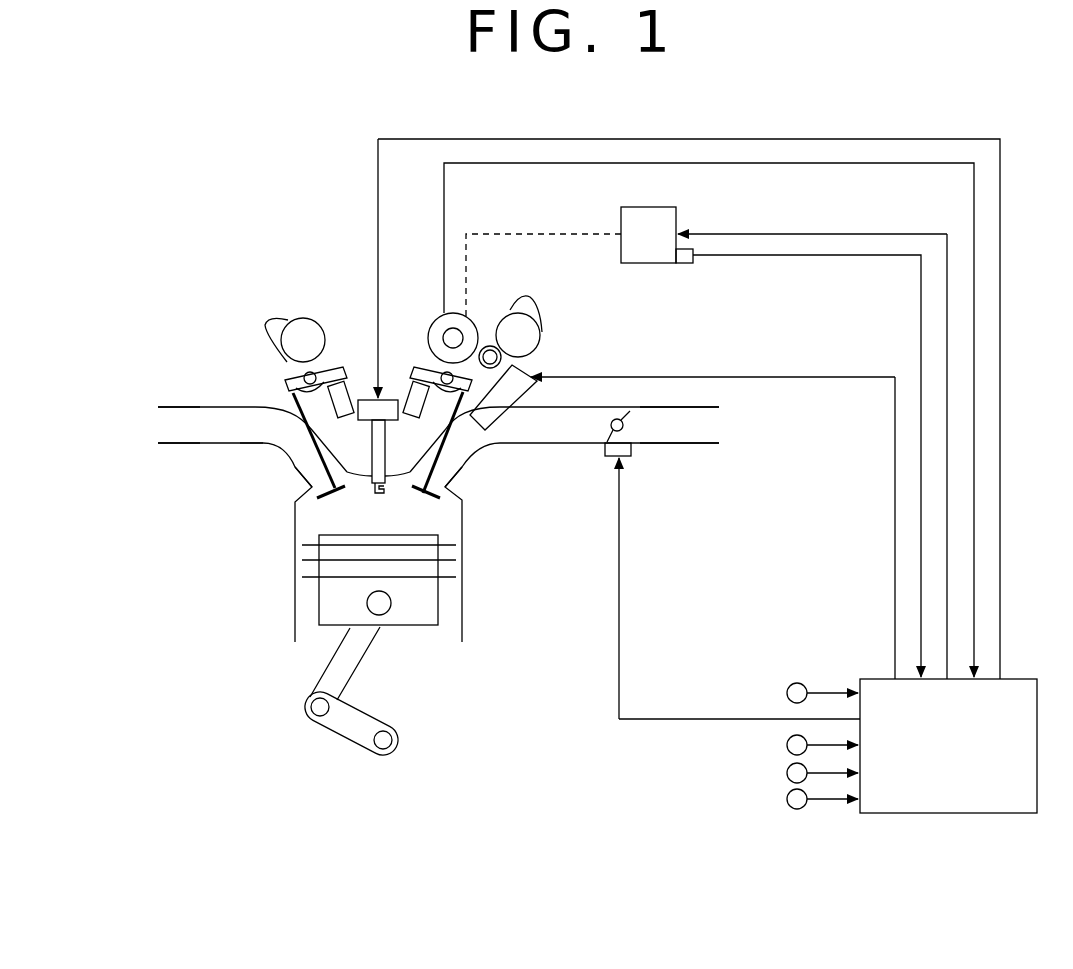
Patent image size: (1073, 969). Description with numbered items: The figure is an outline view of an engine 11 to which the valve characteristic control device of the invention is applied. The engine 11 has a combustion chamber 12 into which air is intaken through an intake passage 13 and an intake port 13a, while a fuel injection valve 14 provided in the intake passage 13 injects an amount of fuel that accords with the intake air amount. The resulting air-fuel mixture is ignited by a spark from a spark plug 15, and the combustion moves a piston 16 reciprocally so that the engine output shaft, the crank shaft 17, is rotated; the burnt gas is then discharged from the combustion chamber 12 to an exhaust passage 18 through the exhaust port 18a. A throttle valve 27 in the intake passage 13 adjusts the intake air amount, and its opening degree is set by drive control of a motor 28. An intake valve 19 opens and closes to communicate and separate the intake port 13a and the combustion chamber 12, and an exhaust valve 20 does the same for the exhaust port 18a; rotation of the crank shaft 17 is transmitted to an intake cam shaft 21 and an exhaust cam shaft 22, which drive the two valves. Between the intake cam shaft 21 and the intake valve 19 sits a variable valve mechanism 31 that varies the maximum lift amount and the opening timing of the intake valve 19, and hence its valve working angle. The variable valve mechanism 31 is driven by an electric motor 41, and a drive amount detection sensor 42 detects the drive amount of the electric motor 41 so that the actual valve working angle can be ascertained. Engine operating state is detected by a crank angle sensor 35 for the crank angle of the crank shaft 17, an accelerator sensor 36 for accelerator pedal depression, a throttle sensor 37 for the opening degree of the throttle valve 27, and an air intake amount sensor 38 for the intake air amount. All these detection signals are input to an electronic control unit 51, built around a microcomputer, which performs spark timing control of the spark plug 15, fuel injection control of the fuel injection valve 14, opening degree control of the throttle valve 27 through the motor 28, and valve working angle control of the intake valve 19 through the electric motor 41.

The engine 11 is at (258, 250).
The combustion chamber 12 is at (313, 517).
The intake passage 13 is at (572, 447).
The intake port 13a is at (463, 455).
The fuel injection valve 14 is at (533, 397).
The spark plug 15 is at (372, 433).
The piston 16 is at (420, 627).
The crank shaft 17 is at (387, 728).
The exhaust passage 18 is at (230, 435).
The exhaust port 18a is at (262, 445).
The intake valve 19 is at (437, 458).
The exhaust valve 20 is at (320, 467).
The intake cam shaft 21 is at (540, 345).
The exhaust cam shaft 22 is at (293, 352).
The throttle valve 27 is at (632, 418).
The motor 28 is at (633, 450).
The variable valve mechanism 31 is at (435, 323).
The crank angle sensor 35 is at (787, 693).
The accelerator sensor 36 is at (787, 745).
The throttle sensor 37 is at (787, 773).
The air intake amount sensor 38 is at (787, 799).
The electric motor 41 is at (678, 217).
The drive amount detection sensor 42 is at (682, 265).
The electronic control unit 51 is at (870, 678).